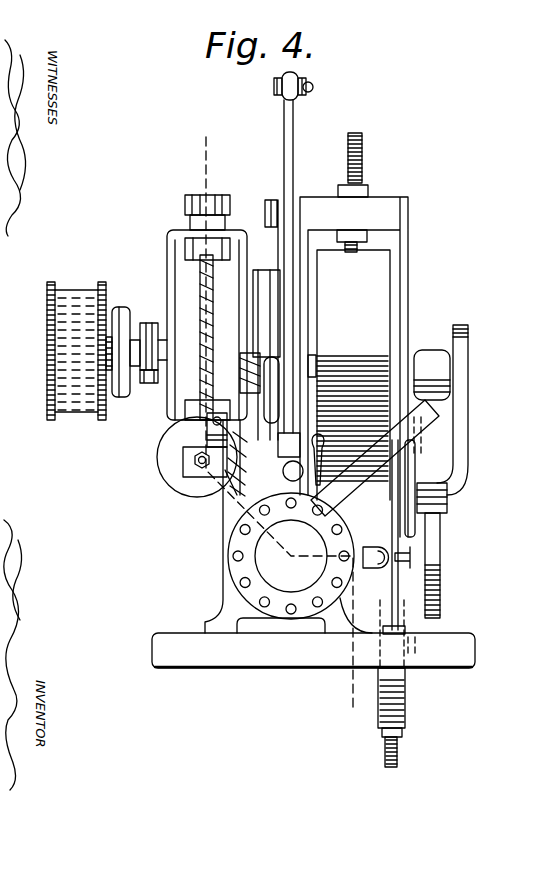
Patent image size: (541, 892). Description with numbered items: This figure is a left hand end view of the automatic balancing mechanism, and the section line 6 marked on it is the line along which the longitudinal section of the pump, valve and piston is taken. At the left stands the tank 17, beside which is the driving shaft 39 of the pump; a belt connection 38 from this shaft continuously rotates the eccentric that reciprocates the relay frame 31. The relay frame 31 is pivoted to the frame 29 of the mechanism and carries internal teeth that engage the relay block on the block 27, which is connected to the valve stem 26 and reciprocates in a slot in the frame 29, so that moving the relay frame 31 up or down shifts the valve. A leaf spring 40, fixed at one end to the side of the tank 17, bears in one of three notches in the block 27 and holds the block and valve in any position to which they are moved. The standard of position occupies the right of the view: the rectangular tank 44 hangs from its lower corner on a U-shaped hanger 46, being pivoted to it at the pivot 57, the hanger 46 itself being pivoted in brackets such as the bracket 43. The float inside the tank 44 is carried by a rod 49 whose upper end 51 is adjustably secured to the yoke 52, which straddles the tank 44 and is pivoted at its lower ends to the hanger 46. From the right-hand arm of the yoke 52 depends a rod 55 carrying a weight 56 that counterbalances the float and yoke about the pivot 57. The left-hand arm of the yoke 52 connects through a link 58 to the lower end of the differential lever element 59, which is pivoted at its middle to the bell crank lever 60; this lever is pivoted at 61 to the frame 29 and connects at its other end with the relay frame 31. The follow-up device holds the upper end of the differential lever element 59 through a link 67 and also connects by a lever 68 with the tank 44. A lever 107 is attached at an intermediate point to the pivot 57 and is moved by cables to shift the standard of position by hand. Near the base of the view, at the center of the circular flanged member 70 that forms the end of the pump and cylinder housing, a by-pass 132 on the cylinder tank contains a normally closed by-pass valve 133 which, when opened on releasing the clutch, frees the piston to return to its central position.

The section line 6— 6 is at (273, 423).
The tank 17 is at (170, 270).
The valve stem 26 is at (198, 465).
The block 27 is at (183, 458).
The frame 29 is at (230, 500).
The relay frame 31 is at (250, 462).
The belt connection 38 is at (120, 397).
The driving shaft 39 is at (107, 342).
The leaf spring 40 is at (207, 420).
The bracket 43 is at (435, 360).
The tank 44 is at (364, 306).
The U-shaped hanger 46 is at (420, 407).
The rod 49 is at (360, 247).
The upper end of rod 51 is at (360, 186).
The yoke 52 is at (396, 216).
The rod 55 is at (395, 585).
The weight 56 is at (405, 697).
The pivot 57 is at (447, 498).
The link 58 is at (300, 355).
The differential lever element 59 is at (284, 163).
The bell crank lever 60 is at (263, 343).
The pivot 61 is at (258, 372).
The link 67 is at (304, 97).
The lever 68 is at (320, 372).
The flange plate 70 is at (291, 556).
The lever 107 is at (468, 462).
The by-pass 132 is at (378, 546).
The by-pass valve 133 is at (412, 558).